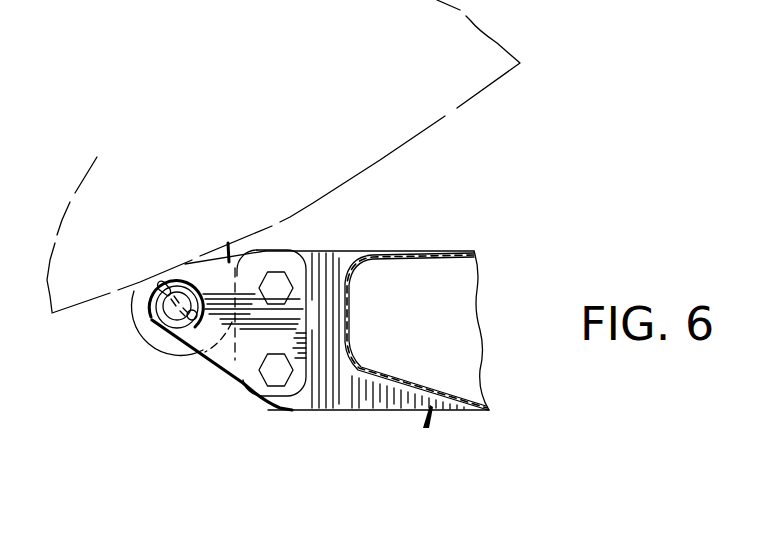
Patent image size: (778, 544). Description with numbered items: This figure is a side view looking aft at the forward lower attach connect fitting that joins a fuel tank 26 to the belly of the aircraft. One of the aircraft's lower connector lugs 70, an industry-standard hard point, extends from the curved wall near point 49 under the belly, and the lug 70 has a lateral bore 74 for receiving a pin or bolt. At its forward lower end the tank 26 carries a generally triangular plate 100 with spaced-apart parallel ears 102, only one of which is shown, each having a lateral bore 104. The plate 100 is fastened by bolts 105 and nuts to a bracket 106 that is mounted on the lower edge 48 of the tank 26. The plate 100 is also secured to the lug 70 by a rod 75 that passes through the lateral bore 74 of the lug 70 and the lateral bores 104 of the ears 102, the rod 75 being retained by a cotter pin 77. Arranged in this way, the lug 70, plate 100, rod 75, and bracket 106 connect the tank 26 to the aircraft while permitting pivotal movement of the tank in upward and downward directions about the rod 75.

The tank 26 is at (426, 428).
The lower edge 48 is at (347, 340).
The point 49 is at (316, 201).
The lower connector lug 70 is at (170, 345).
The lateral bore 74 is at (181, 284).
The rod 75 is at (207, 302).
The cotter pin 77 is at (162, 283).
The triangular plate 100 is at (218, 358).
The ear 102 is at (213, 280).
The lateral bore 104 is at (168, 306).
The bolt 105 is at (277, 372).
The bracket 106 is at (317, 393).